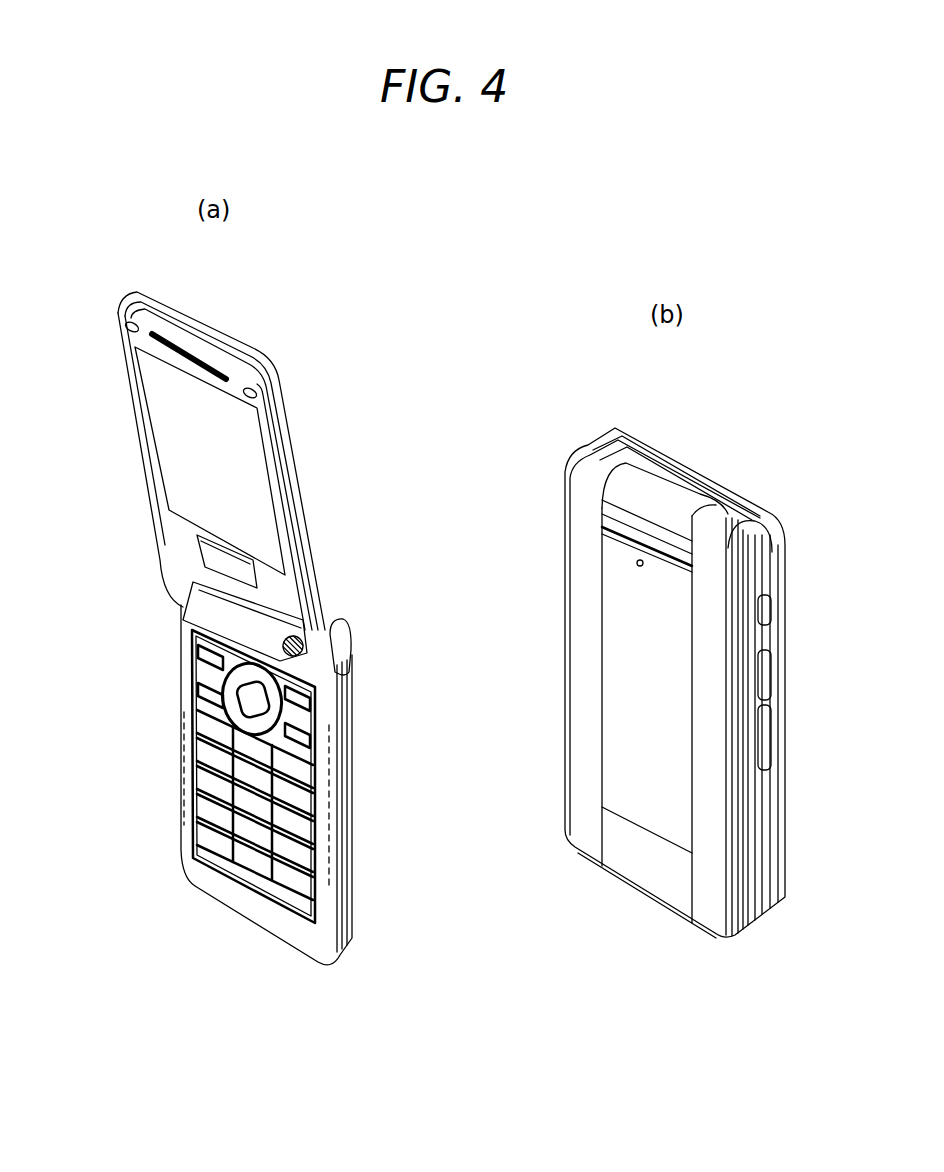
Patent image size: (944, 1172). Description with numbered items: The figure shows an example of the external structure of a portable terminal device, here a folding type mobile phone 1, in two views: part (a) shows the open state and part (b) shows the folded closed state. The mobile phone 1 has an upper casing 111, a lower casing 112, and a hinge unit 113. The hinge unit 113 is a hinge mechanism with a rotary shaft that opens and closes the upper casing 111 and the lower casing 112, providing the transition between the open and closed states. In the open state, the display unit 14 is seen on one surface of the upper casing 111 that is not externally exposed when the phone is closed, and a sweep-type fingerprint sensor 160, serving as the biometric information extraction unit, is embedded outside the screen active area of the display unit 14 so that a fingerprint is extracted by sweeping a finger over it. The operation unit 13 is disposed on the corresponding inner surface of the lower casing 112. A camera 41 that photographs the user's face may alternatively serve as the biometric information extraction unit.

The mobile phone 1 is at (342, 442).
The operation unit 13 is at (178, 755).
The display unit 14 is at (187, 463).
The camera 41 is at (345, 645).
The upper casing 111 is at (130, 395).
The lower casing 112 is at (320, 883).
The hinge unit 113 is at (217, 607).
The fingerprint sensor 160 is at (227, 553).